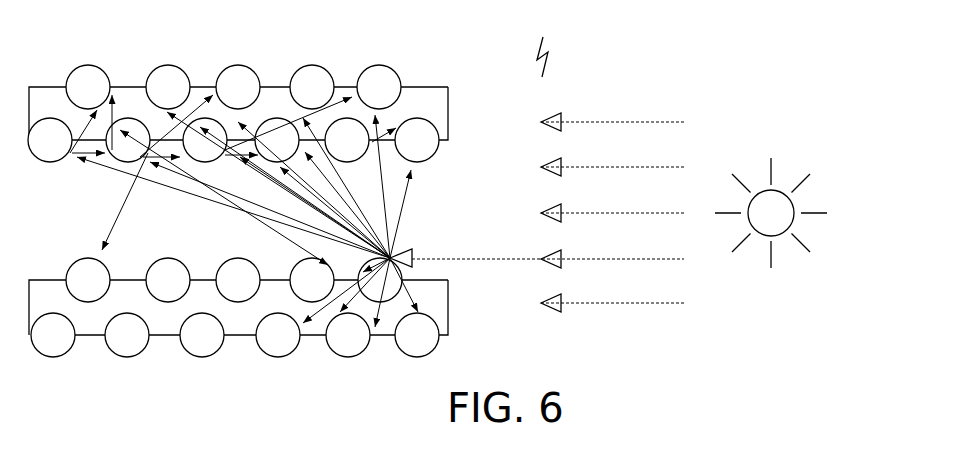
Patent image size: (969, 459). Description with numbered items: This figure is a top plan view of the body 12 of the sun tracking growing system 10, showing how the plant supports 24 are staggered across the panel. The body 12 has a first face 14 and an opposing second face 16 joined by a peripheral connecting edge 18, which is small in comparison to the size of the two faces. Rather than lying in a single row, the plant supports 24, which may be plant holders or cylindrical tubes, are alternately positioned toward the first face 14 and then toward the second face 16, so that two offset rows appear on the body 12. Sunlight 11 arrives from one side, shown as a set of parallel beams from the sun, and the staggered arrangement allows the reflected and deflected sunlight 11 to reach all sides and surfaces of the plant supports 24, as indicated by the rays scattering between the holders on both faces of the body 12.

The sun tracking growing system 10 is at (552, 42).
The sunlight 11 is at (402, 203).
The body 12 is at (202, 86).
The first face 14 is at (45, 86).
The second face 16 is at (440, 140).
The peripheral connecting edge 18 is at (447, 100).
The plant supports 24 is at (230, 70).